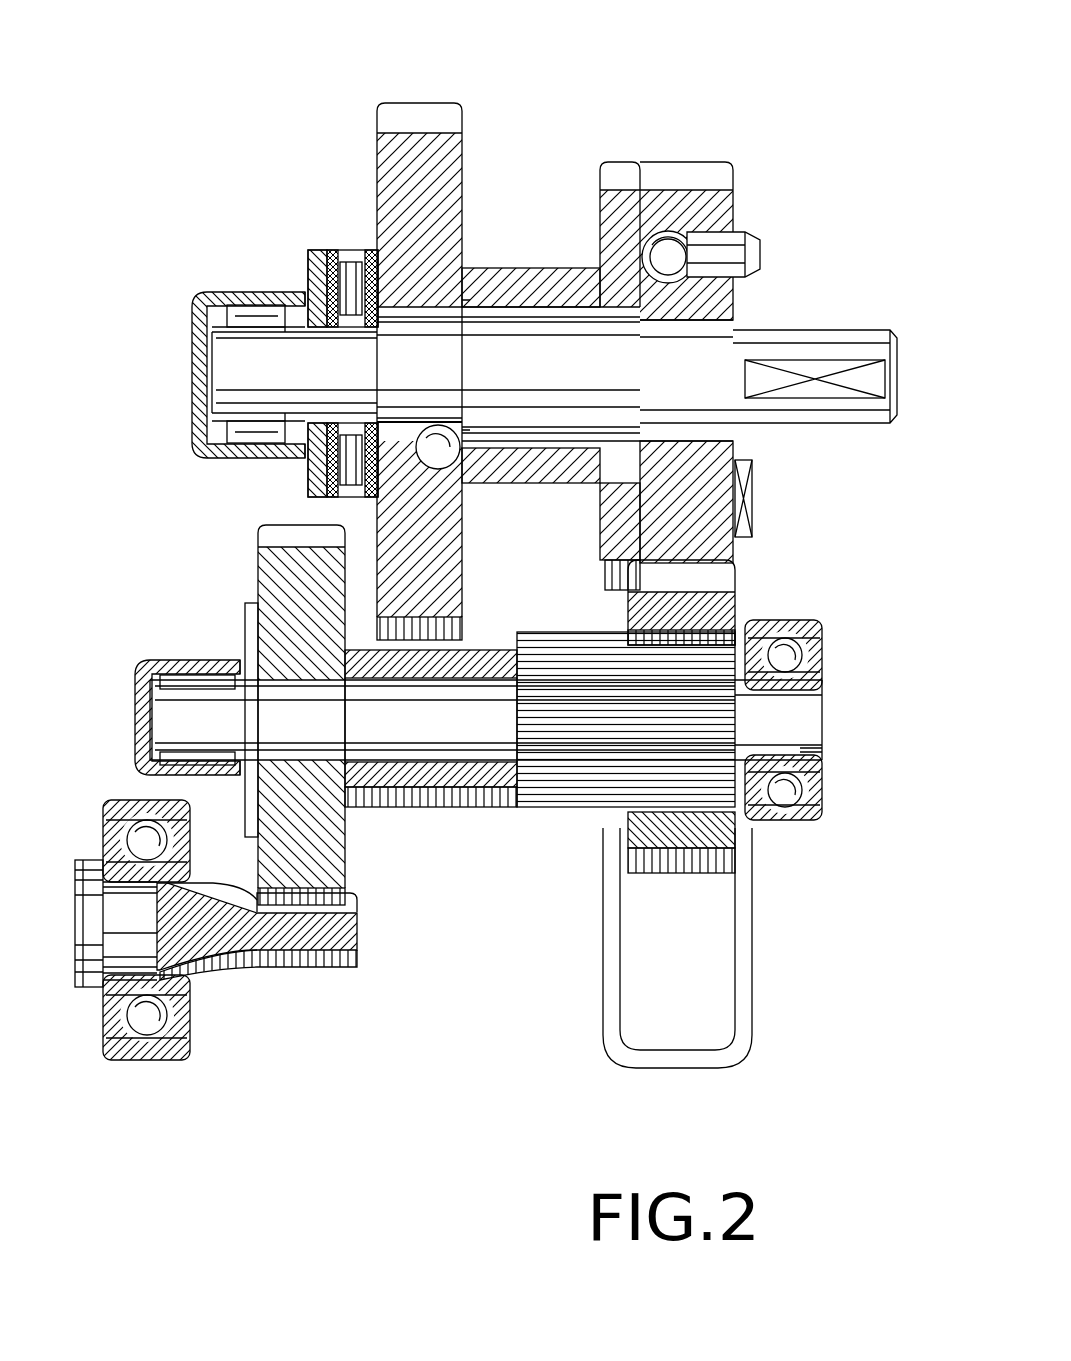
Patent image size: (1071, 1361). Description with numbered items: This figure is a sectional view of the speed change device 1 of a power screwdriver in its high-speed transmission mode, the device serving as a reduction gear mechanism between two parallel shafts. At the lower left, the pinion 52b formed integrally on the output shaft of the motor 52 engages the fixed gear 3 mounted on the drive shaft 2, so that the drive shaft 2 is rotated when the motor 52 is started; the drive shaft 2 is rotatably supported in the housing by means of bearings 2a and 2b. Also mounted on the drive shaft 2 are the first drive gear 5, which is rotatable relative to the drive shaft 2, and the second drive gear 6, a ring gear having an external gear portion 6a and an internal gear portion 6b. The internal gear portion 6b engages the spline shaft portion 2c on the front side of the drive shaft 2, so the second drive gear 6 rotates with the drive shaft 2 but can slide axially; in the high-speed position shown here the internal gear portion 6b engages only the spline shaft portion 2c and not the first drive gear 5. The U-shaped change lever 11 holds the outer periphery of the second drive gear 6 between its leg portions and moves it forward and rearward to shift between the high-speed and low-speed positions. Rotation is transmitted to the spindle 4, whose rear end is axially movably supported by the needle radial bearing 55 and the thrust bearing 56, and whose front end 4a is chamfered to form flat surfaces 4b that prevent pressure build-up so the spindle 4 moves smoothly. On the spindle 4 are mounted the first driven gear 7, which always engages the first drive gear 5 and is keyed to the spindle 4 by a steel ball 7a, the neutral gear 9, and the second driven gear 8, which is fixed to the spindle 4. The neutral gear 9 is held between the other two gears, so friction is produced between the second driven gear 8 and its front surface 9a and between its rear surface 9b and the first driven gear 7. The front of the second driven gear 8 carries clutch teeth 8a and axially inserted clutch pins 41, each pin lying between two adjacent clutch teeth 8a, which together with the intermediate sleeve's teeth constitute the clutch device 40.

The speed change device 1 is at (148, 372).
The drive shaft 2 is at (485, 735).
The bearing 2a is at (786, 797).
The bearing 2b is at (186, 672).
The spline shaft portion 2c is at (590, 812).
The fixed gear 3 is at (300, 830).
The spindle 4 is at (525, 345).
The front end 4a is at (775, 330).
The flat surfaces 4b is at (815, 378).
The first drive gear 5 is at (425, 775).
The second drive gear 6 is at (672, 835).
The external gear portion 6a is at (722, 545).
The internal gear portion 6b is at (808, 750).
The first driven gear 7 is at (428, 148).
The steel ball 7a is at (437, 440).
The second driven gear 8 is at (690, 205).
The clutch teeth 8a is at (752, 497).
The neutral gear 9 is at (576, 290).
The front surface 9a is at (666, 232).
The rear surface 9b is at (443, 300).
The change lever 11 is at (670, 1060).
The clutch device 40 is at (753, 224).
The clutch pins 41 is at (706, 256).
The motor 52 is at (275, 962).
The pinion 52b is at (216, 923).
The needle radial bearing 55 is at (242, 318).
The thrust bearing 56 is at (352, 252).